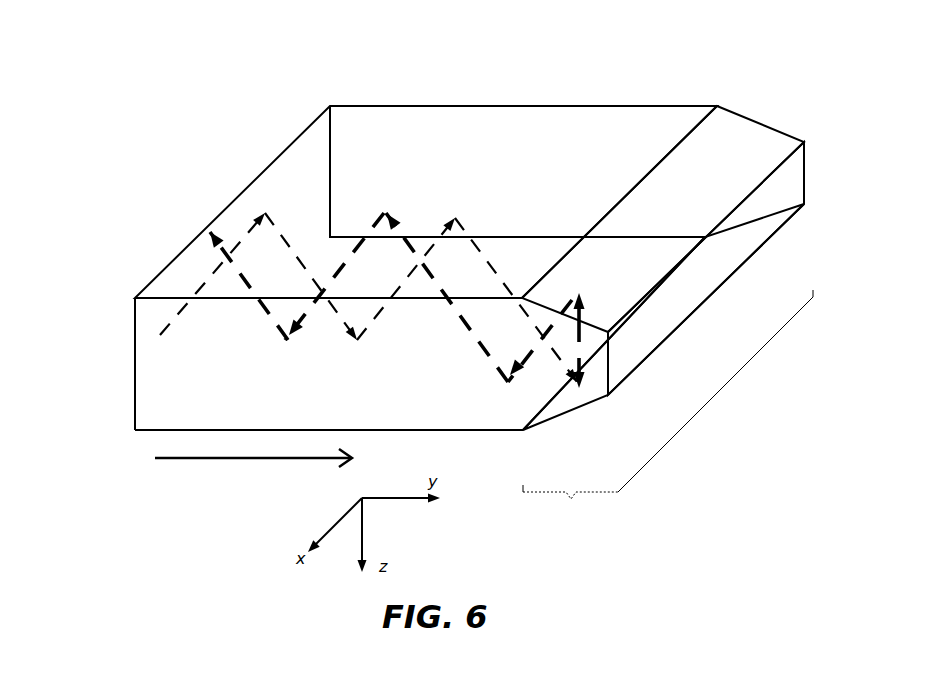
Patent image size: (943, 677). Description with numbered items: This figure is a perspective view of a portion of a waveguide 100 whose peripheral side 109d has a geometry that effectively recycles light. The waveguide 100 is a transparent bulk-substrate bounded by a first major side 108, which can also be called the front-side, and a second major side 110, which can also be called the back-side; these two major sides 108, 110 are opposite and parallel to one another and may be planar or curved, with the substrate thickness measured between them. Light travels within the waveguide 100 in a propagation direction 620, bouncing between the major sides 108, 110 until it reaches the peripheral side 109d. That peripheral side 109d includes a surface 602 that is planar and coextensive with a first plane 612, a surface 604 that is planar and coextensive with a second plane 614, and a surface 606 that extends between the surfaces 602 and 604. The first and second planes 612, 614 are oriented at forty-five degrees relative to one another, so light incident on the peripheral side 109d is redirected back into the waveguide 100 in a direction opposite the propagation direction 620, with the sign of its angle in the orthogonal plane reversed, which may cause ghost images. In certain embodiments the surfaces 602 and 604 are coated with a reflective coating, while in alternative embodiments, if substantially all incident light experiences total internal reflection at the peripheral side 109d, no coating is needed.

The first major side 108 is at (462, 140).
The second major side 110 is at (468, 398).
The waveguide 100 is at (83, 364).
The surface 602 is at (666, 211).
The first plane 612 is at (777, 112).
The surface 604 is at (663, 333).
The second plane 614 is at (587, 407).
The surface 606 is at (700, 290).
The peripheral side 109d is at (668, 407).
The propagation direction 620 is at (250, 460).